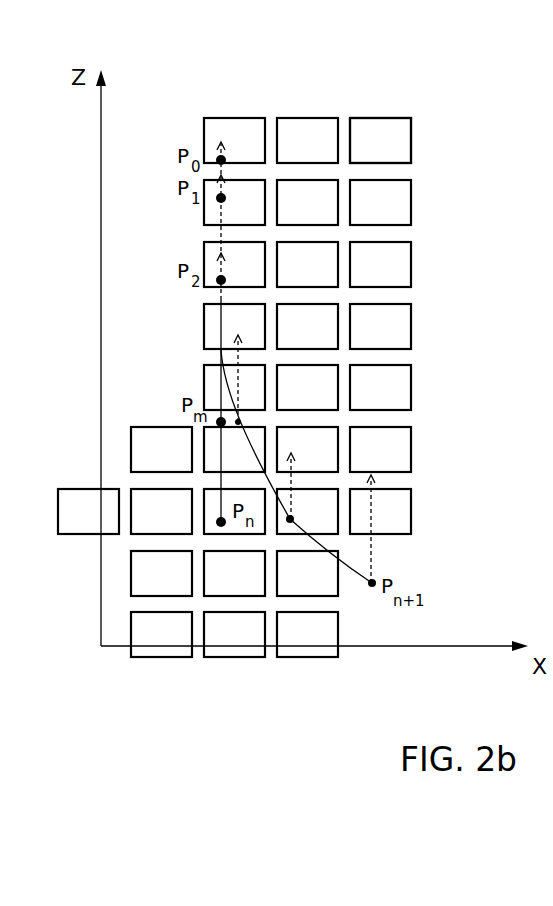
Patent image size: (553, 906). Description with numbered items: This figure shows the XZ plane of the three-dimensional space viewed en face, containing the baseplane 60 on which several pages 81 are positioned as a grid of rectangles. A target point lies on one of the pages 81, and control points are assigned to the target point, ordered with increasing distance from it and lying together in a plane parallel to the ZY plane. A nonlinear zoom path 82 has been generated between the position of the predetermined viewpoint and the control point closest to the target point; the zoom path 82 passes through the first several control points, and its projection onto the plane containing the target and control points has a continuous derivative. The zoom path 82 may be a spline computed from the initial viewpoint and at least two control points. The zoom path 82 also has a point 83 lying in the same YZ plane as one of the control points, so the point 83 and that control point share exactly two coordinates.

The baseplane 60 is at (474, 196).
The page 81 is at (412, 142).
The nonlinear zoom path 82 is at (349, 568).
The zoom path point 83 is at (290, 519).